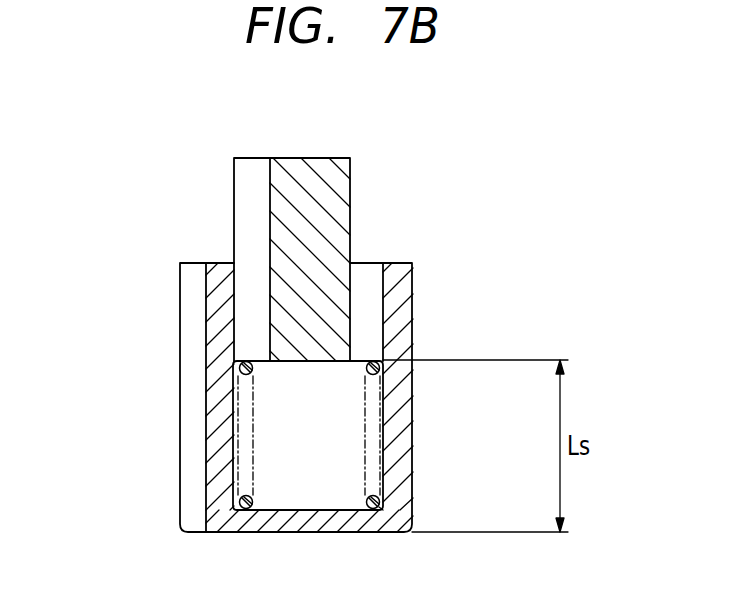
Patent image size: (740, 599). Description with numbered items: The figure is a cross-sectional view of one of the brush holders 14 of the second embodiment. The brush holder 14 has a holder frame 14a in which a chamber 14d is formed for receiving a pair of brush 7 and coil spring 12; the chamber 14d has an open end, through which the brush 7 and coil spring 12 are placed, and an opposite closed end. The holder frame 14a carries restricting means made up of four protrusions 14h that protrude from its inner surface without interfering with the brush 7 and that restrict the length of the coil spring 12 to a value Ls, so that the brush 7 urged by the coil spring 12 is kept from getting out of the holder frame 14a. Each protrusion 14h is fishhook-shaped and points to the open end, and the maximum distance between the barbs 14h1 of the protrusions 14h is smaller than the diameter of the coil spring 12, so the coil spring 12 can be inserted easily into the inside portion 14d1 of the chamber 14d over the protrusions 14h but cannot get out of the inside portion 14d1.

The brush 7 is at (319, 165).
The coil spring 12 is at (380, 508).
The brush holder 14 is at (180, 493).
The holder frame 14a is at (412, 283).
The chamber 14d is at (365, 296).
The inside portion 14d1 is at (341, 445).
The protrusion 14h is at (242, 362).
The barb 14h1 is at (245, 378).